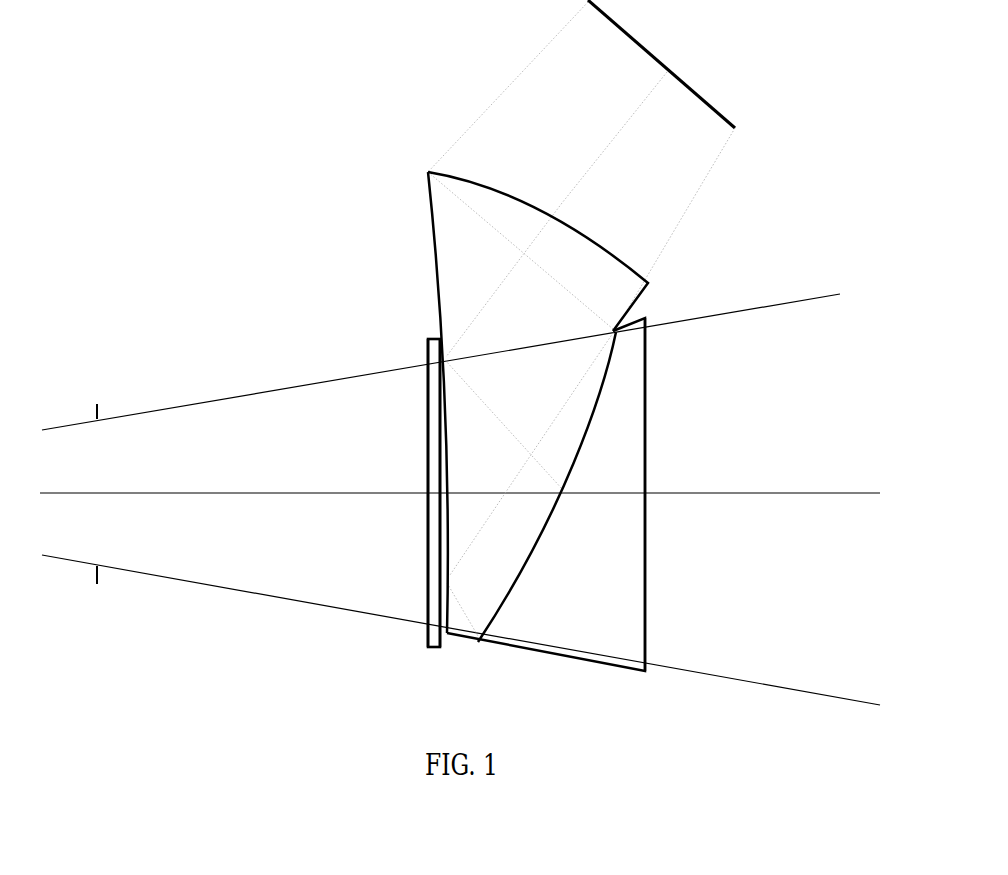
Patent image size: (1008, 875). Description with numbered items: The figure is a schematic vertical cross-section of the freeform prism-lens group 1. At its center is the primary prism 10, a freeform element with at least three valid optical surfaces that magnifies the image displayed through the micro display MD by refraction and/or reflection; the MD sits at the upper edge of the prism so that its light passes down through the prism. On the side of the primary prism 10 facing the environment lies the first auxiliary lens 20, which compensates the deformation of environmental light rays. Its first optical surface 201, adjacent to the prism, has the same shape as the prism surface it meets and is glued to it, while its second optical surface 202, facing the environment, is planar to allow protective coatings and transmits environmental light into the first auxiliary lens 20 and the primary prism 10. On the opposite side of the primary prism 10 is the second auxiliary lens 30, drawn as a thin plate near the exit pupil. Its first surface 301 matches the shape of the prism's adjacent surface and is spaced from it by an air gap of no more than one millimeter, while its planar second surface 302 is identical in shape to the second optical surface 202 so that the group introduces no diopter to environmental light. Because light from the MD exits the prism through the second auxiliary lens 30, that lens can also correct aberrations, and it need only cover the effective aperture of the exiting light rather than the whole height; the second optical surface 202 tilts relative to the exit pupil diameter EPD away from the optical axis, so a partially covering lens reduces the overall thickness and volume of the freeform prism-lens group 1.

The freeform prism-lens group 1 is at (312, 191).
The primary prism 10 is at (430, 226).
The first auxiliary lens 20 is at (579, 513).
The first optical surface 201 is at (542, 507).
The second optical surface 202 is at (678, 494).
The second auxiliary lens 30 is at (407, 492).
The first surface 301 is at (407, 518).
The second surface 302 is at (395, 493).
The micro display MD is at (632, 64).
The exit pupil diameter EPD is at (461, 499).